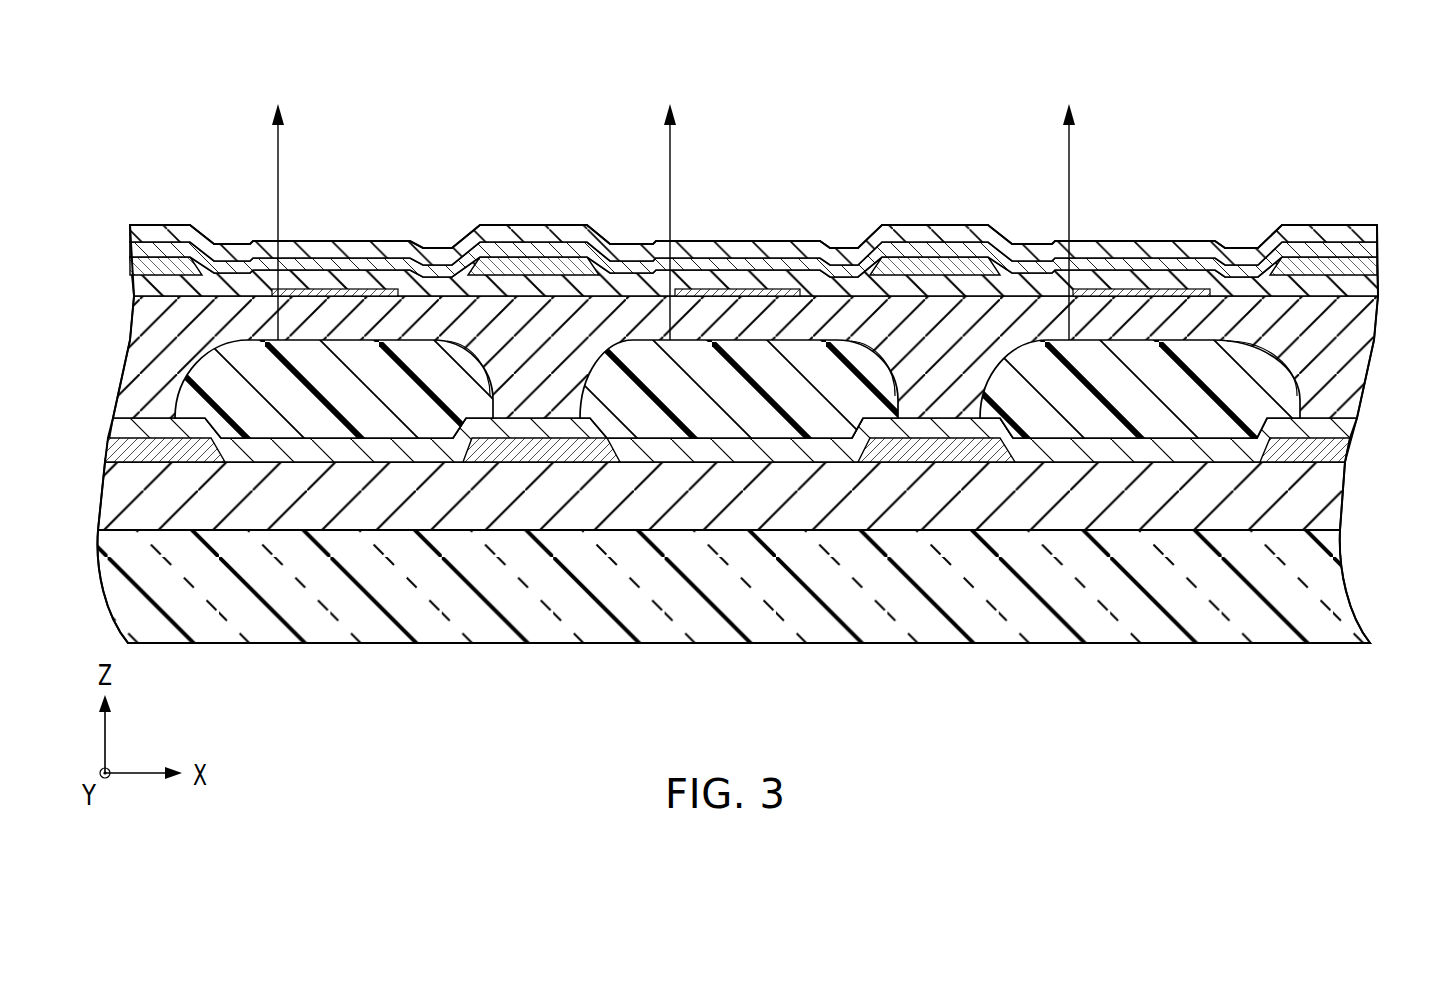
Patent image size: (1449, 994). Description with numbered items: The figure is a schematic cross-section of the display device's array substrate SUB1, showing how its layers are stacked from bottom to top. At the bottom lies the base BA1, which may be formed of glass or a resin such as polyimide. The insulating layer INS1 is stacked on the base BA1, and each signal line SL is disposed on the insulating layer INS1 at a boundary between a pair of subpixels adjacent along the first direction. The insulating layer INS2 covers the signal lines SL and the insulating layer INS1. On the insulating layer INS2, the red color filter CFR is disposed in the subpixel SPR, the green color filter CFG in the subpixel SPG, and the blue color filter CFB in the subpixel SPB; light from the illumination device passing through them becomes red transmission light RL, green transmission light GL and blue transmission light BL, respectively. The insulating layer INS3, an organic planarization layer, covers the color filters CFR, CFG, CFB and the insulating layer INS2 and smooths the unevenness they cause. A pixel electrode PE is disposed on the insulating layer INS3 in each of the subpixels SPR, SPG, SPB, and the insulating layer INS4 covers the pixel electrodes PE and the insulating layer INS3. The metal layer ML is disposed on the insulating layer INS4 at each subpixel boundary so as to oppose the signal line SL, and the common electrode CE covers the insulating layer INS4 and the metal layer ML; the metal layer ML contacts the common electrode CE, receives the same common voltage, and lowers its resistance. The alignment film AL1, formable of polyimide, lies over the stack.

The substrate SUB1 is at (1365, 183).
The base BA1 is at (733, 586).
The insulating layer INS1 is at (721, 496).
The insulating layer INS2 is at (1350, 430).
The insulating layer INS3 is at (1363, 349).
The insulating layer INS4 is at (1372, 289).
The signal line SL is at (168, 445).
The color filter CFR is at (334, 389).
The color filter CFG is at (739, 389).
The color filter CFB is at (1140, 389).
The pixel electrode PE is at (378, 290).
The metal layer ML is at (170, 265).
The common electrode CE is at (1372, 248).
The alignment film AL1 is at (1367, 234).
The red transmission light RL is at (279, 204).
The green transmission light GL is at (670, 204).
The blue transmission light BL is at (1069, 204).
The subpixel SPR is at (306, 196).
The subpixel SPG is at (719, 196).
The subpixel SPB is at (1126, 196).